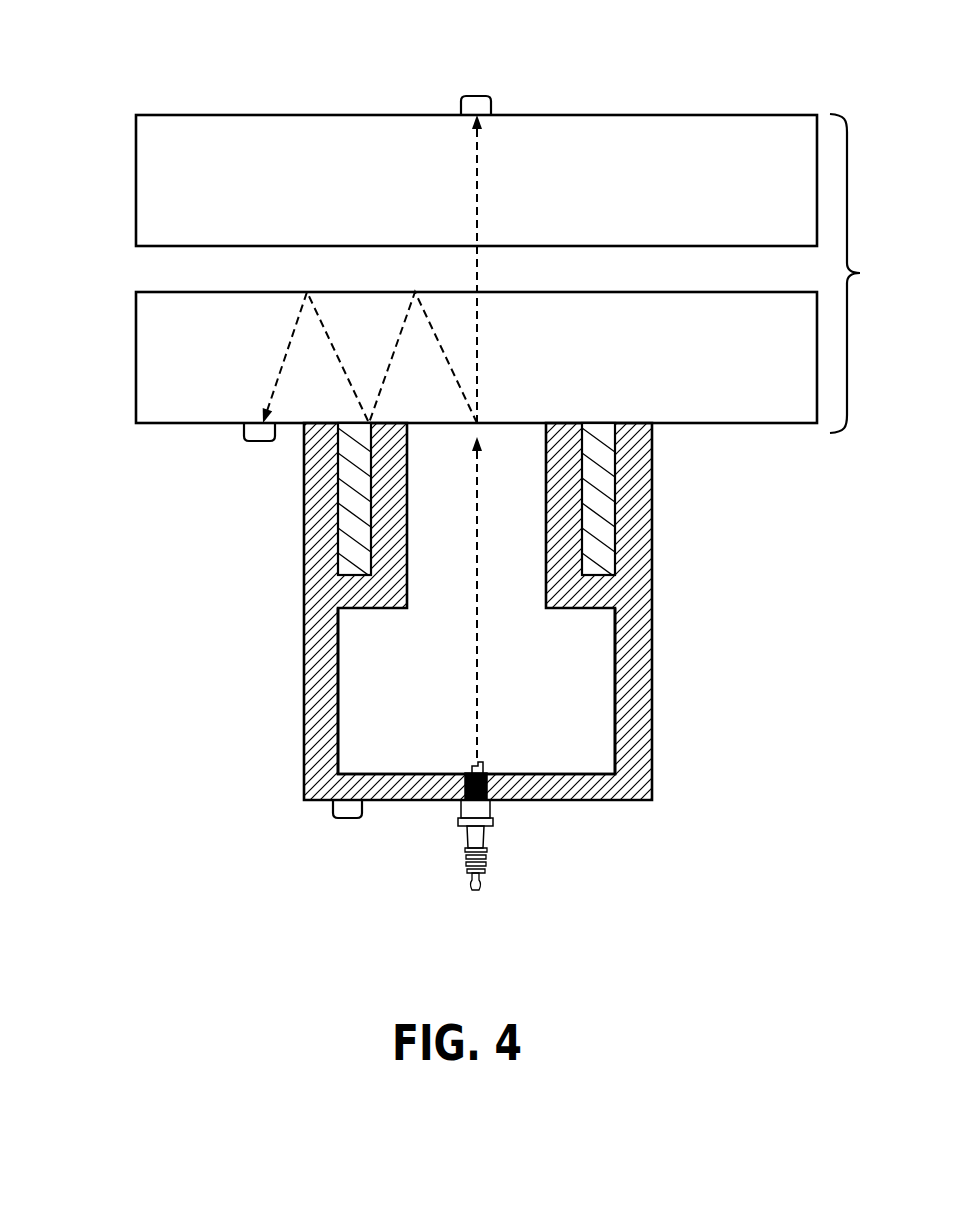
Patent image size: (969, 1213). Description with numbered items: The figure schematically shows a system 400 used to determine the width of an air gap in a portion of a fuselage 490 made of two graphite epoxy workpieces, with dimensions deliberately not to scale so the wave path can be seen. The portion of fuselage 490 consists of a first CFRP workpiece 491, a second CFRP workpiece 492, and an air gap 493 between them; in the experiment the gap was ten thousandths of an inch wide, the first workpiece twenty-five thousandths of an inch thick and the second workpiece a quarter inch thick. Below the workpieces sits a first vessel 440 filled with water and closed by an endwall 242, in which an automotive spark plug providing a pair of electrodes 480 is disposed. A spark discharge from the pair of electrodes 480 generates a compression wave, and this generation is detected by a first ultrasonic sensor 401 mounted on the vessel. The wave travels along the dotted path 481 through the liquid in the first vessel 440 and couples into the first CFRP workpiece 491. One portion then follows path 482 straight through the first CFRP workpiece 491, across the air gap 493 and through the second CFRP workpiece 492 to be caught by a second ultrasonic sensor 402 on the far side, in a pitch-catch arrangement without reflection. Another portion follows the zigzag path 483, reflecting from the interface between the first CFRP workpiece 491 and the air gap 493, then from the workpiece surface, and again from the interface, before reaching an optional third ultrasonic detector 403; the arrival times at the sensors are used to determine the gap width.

The system 400 is at (280, 857).
The first ultrasonic sensor 401 is at (352, 821).
The second ultrasonic sensor 402 is at (478, 96).
The third ultrasonic detector 403 is at (252, 444).
The endwall 242 is at (408, 773).
The first vessel 440 is at (647, 802).
The pair of electrodes 480 is at (483, 768).
The path 481 is at (477, 605).
The path 482 is at (477, 205).
The path 483 is at (338, 357).
The portion of a fuselage 490 is at (864, 273).
The first CFRP workpiece 491 is at (136, 373).
The second CFRP workpiece 492 is at (136, 171).
The air gap 493 is at (136, 272).